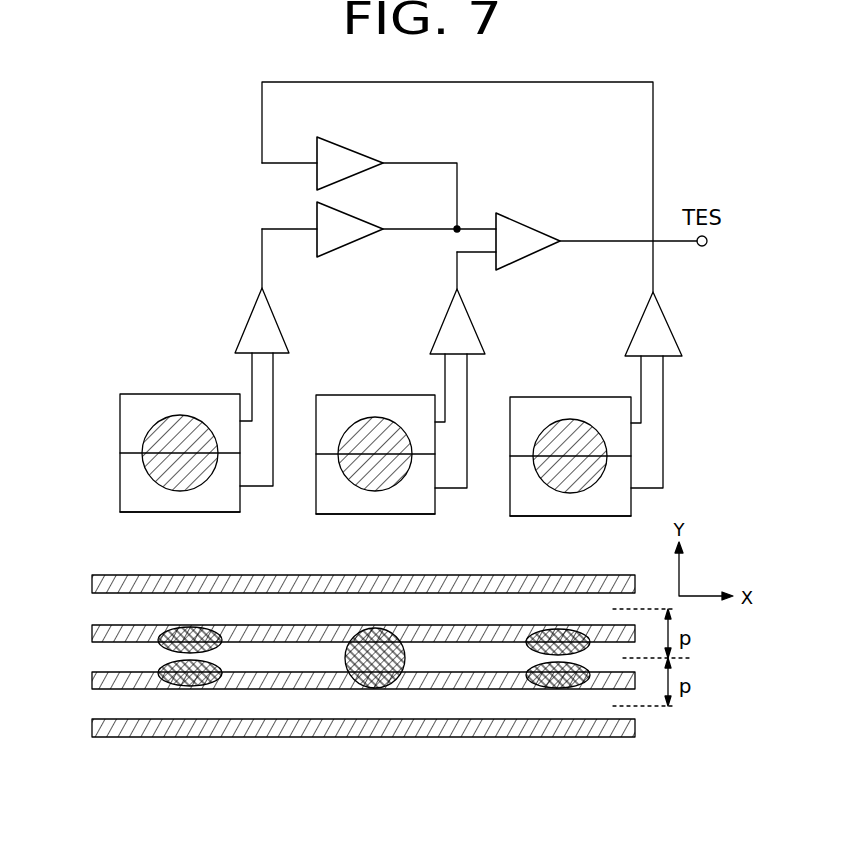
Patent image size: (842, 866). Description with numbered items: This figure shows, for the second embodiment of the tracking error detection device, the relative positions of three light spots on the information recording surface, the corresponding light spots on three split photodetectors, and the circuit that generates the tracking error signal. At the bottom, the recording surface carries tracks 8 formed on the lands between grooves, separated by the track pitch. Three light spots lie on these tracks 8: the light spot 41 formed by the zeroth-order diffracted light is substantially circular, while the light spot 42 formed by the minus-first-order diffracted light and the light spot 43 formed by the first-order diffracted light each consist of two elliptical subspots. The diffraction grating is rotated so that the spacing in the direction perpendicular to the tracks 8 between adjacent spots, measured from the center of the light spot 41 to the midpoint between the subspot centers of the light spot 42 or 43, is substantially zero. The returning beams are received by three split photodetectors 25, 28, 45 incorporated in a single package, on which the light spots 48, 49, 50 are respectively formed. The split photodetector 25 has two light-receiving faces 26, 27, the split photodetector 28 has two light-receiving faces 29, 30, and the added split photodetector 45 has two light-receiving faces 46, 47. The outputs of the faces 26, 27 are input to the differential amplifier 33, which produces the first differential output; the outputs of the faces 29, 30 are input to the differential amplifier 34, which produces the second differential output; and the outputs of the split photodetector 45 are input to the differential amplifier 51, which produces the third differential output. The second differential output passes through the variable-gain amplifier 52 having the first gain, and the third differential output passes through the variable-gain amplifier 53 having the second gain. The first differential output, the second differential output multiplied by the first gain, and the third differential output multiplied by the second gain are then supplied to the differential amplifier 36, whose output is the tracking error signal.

The tracks 8 is at (103, 607).
The split photodetector 25 is at (348, 395).
The light-receiving face 26 is at (405, 397).
The light-receiving face 27 is at (422, 508).
The split photodetector 28 is at (157, 394).
The light-receiving face 29 is at (120, 421).
The light-receiving face 30 is at (120, 491).
The differential amplifier 33 is at (470, 322).
The differential amplifier 34 is at (247, 320).
The differential amplifier 36 is at (535, 226).
The light spot 41 is at (345, 668).
The light spot 42 is at (152, 663).
The light spot 43 is at (520, 665).
The split photodetector 45 is at (543, 397).
The light-receiving face 46 is at (597, 400).
The light-receiving face 47 is at (603, 508).
The light spot 48 is at (378, 418).
The light spot 49 is at (192, 418).
The light spot 50 is at (568, 492).
The differential amplifier 51 is at (670, 326).
The variable-gain amplifier 52 is at (352, 213).
The variable-gain amplifier 53 is at (352, 148).